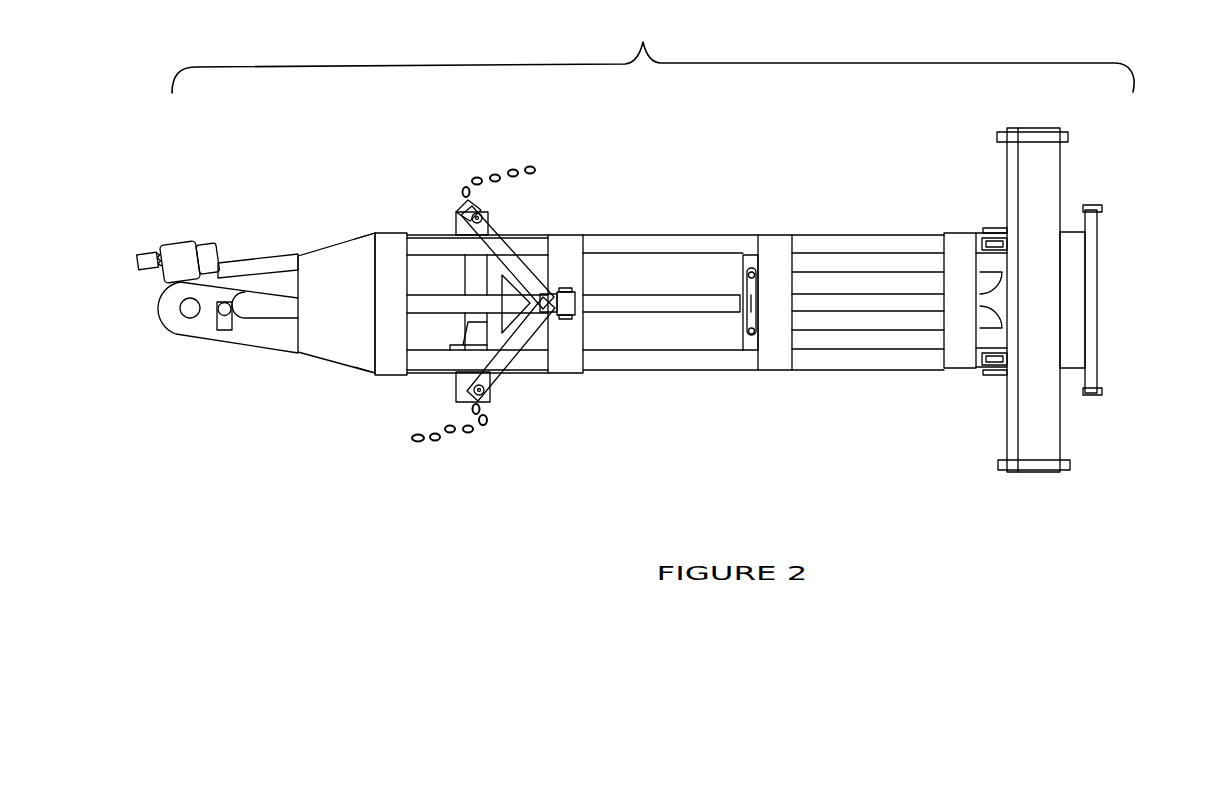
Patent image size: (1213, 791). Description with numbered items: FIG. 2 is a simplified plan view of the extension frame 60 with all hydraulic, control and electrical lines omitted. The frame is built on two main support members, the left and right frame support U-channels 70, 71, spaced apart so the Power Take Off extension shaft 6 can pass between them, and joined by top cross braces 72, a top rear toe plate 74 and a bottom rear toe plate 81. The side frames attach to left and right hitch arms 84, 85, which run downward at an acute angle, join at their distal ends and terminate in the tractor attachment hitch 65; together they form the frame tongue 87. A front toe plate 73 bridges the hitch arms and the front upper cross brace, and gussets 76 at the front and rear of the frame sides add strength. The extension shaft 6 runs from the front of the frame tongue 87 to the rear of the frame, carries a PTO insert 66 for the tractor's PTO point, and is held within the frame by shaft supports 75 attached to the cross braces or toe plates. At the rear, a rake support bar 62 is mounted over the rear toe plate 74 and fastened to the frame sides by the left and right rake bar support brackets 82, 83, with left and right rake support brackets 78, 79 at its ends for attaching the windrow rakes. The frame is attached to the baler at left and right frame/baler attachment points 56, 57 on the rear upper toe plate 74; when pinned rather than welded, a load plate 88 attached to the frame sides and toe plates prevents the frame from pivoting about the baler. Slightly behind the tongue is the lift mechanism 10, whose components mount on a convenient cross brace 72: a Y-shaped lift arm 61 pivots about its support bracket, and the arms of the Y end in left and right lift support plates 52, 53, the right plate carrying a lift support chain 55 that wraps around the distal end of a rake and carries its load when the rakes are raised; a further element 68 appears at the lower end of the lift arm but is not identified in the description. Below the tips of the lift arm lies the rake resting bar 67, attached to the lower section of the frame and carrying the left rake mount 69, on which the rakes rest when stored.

The extension frame 60 is at (653, 52).
The PTO insert 66 is at (145, 247).
The right hitch arm 85 is at (277, 257).
The left hitch arm 84 is at (273, 343).
The tractor attachment hitch 65 is at (193, 327).
The frame tongue 87 is at (272, 302).
The front toe plate 73 is at (322, 343).
The gussets 76 is at (363, 233).
The top cross braces 72 is at (393, 363).
The left frame support U-channel 70 is at (813, 362).
The right frame support U-channel 71 is at (870, 240).
The bottom rear toe plate 81 is at (890, 340).
The Power Take Off extension shaft 6 is at (670, 302).
The shaft supports 75 is at (747, 285).
The lift mechanism 10 is at (557, 300).
The lift arm 61 is at (502, 267).
The right lift support plate 53 is at (465, 200).
The rake resting bar 67 is at (490, 227).
The left rake mount 69 is at (485, 213).
The lower pivot 68 is at (492, 390).
The right lift support chain 55 is at (525, 163).
The left lift support plate 52 is at (453, 393).
The right rake bar support bracket 83 is at (992, 228).
The left rake bar support bracket 82 is at (990, 375).
The rake support bar 62 is at (1052, 178).
The right rake support bracket 79 is at (1068, 138).
The left rake support bracket 78 is at (1072, 463).
The top rear toe plate 74 is at (1067, 370).
The load plate 88 is at (1097, 287).
The right frame/baler attachment point 57 is at (1102, 208).
The left frame/baler attachment point 56 is at (1103, 392).